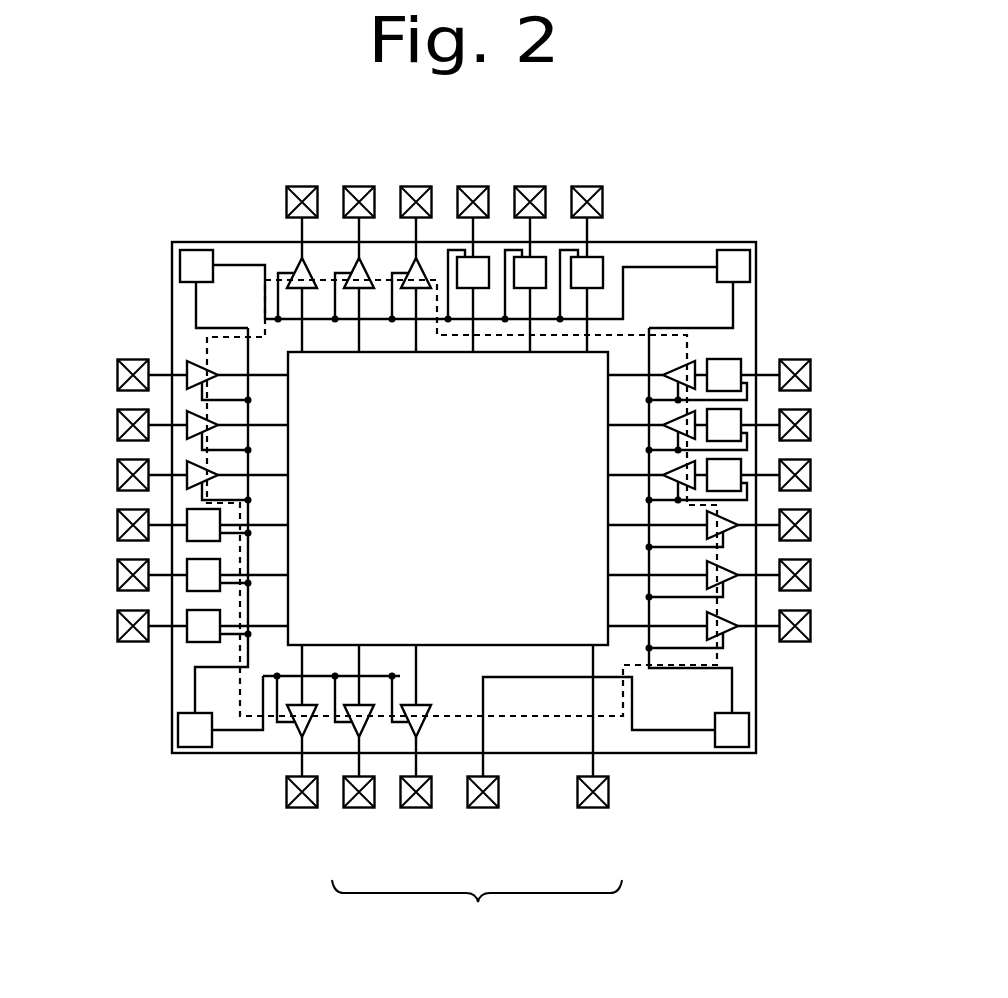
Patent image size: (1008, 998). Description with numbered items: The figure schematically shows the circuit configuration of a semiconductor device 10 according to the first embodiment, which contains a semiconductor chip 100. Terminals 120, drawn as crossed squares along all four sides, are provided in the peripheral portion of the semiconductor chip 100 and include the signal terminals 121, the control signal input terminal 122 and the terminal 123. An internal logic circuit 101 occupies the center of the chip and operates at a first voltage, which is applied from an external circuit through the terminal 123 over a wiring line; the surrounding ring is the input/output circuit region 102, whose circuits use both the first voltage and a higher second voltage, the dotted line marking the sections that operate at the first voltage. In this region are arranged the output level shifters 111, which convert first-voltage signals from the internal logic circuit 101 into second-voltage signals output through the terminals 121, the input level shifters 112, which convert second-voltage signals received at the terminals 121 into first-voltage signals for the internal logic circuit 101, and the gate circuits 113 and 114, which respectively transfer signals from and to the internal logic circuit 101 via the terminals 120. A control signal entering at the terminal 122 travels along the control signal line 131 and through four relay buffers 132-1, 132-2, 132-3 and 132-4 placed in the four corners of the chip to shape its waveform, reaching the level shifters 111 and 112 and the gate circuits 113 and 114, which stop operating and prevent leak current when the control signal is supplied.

The semiconductor device 10 is at (88, 285).
The semiconductor chip 100 is at (237, 753).
The internal logic circuit 101 is at (540, 430).
The input/output circuit region 102 is at (740, 298).
The output level shifter 111 is at (363, 267).
The input level shifter 112 is at (187, 365).
The gate circuit 113 is at (592, 255).
The gate circuit 114 is at (200, 645).
The terminals 120 is at (477, 910).
The terminal 121 is at (117, 375).
The control signal input terminal 122 is at (483, 808).
The terminal 123 is at (593, 808).
The control signal line 131 is at (657, 730).
The relay buffer 132-1 is at (749, 733).
The relay buffer 132-2 is at (733, 248).
The relay buffer 132-3 is at (193, 260).
The relay buffer 132-4 is at (178, 730).